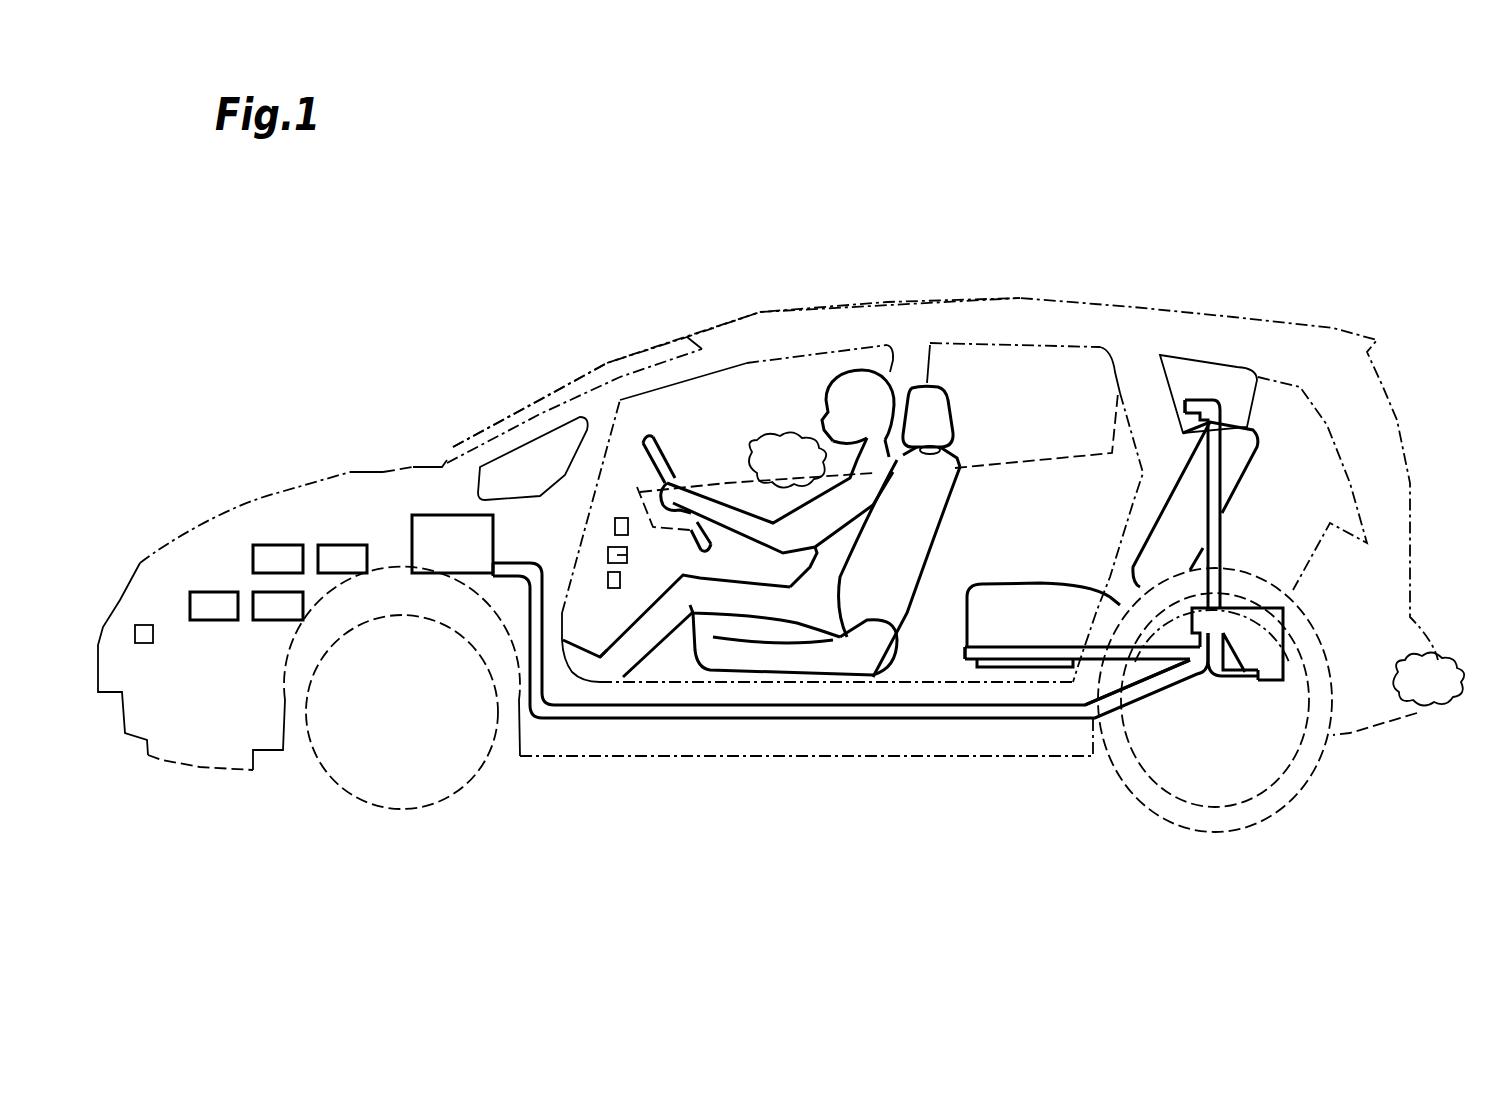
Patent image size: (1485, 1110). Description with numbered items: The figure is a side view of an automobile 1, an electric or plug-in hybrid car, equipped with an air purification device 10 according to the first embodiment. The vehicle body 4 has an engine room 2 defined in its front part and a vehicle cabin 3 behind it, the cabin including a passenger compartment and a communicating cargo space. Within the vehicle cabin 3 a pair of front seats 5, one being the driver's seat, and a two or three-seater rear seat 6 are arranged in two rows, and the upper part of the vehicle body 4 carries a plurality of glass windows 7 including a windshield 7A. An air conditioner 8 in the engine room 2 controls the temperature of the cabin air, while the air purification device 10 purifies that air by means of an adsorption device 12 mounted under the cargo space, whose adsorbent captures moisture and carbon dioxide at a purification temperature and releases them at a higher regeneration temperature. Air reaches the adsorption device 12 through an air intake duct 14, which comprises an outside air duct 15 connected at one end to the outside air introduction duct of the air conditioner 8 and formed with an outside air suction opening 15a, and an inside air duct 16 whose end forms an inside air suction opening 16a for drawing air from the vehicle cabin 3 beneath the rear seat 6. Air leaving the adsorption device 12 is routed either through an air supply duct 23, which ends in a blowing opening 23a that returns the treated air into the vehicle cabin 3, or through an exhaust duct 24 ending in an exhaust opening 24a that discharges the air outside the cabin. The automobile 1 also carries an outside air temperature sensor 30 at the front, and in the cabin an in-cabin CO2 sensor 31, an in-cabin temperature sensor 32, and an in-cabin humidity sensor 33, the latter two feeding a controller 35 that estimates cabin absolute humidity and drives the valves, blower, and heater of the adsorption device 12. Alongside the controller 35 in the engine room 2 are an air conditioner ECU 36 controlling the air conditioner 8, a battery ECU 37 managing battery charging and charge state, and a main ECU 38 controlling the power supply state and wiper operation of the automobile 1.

The automobile 1 is at (1103, 213).
The engine room 2 is at (216, 717).
The vehicle cabin 3 is at (1038, 513).
The vehicle body 4 is at (890, 320).
The front seats 5 is at (787, 663).
The rear seat 6 is at (1063, 595).
The glass windows 7 is at (755, 377).
The windshield 7A is at (587, 373).
The air conditioner 8 is at (441, 520).
The air purification device 10 is at (1356, 619).
The adsorption device 12 is at (1263, 608).
The air intake duct 14 is at (1194, 678).
The outside air duct 15 is at (940, 710).
The outside air suction opening 15a is at (493, 555).
The inside air duct 16 is at (1013, 650).
The inside air suction opening 16a is at (967, 647).
The air supply duct 23 is at (1200, 400).
The blowing opening 23a is at (1187, 405).
The exhaust duct 24 is at (1226, 682).
The exhaust opening 24a is at (1262, 682).
The outside air temperature sensor 30 is at (143, 625).
The in-cabin CO2 sensor 31 is at (624, 518).
The in-cabin temperature sensor 32 is at (628, 555).
The in-cabin humidity sensor 33 is at (612, 588).
The controller 35 is at (340, 553).
The air conditioner ECU 36 is at (278, 553).
The battery ECU 37 is at (215, 592).
The main ECU 38 is at (272, 612).